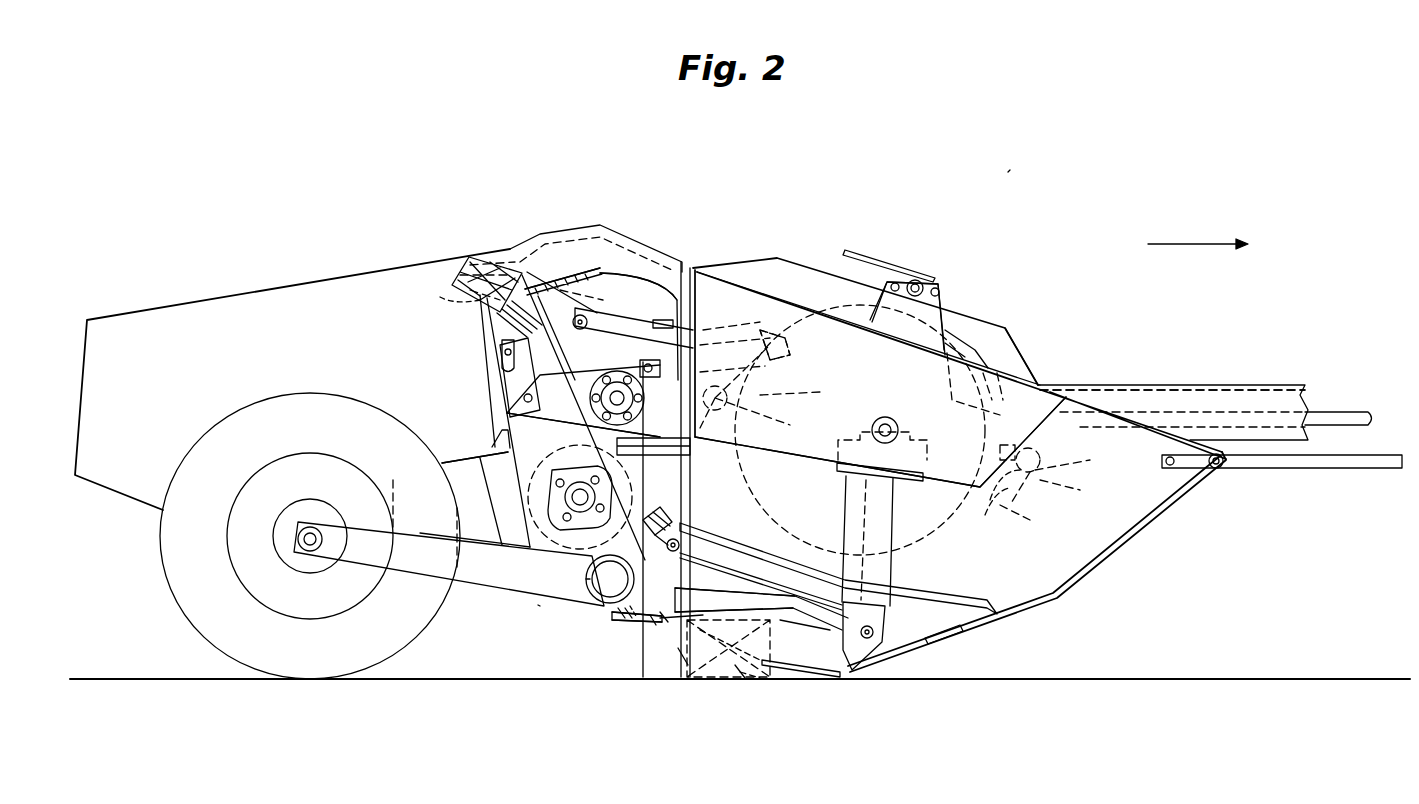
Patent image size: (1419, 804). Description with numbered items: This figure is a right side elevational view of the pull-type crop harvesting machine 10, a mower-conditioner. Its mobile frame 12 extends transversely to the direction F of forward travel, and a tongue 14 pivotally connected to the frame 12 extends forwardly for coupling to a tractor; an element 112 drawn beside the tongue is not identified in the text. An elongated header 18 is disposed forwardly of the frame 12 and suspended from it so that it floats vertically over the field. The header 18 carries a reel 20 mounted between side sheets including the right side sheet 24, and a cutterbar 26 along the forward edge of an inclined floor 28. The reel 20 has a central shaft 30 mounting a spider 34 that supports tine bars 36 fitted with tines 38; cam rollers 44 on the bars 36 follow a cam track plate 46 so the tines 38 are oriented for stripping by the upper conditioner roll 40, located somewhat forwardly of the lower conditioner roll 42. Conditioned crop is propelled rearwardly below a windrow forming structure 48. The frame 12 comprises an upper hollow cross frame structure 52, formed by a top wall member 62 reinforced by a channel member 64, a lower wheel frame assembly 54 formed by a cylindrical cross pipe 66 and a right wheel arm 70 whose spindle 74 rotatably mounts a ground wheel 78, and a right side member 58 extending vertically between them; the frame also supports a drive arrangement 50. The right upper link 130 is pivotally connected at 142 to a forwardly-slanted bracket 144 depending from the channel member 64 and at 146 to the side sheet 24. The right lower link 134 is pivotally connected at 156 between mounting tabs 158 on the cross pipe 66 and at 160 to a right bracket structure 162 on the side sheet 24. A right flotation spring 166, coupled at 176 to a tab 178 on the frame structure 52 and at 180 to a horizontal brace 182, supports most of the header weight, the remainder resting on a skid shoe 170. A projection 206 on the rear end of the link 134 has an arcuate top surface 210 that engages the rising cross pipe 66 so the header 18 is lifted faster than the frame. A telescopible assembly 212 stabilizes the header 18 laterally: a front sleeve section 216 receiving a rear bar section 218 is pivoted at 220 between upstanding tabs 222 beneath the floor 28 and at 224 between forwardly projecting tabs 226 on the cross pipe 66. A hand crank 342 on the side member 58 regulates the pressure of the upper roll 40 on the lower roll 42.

The crop material harvesting machine 10 is at (1006, 176).
The mobile frame 12 is at (537, 607).
The tongue 14 is at (1146, 376).
The header 18 is at (770, 255).
The reel 20 is at (943, 287).
The right side sheet 24 is at (1100, 565).
The cutterbar 26 is at (820, 680).
The floor 28 is at (758, 566).
The central shaft 30 is at (897, 422).
The spider 34 is at (1000, 501).
The tine bars 36 is at (915, 280).
The tines 38 is at (850, 256).
The upper conditioner roll 40 is at (567, 437).
The lower conditioner roll 42 is at (517, 470).
The cam rollers 44 is at (915, 348).
The cam track plate 46 is at (978, 350).
The windrow forming structure 48 is at (320, 280).
The drive arrangement 50 is at (1322, 410).
The upper hollow cross frame structure 52 is at (596, 234).
The lower wheel frame assembly 54 is at (573, 612).
The right side member 58 is at (657, 291).
The top wall member 62 is at (665, 262).
The channel member 64 is at (555, 285).
The cylindrical cross pipe 66 is at (586, 579).
The right wheel arm 70 is at (498, 585).
The spindle 74 is at (297, 535).
The ground wheel 78 is at (165, 566).
The shaft 112 is at (1225, 385).
The right upper link 130 is at (708, 330).
The right lower link 134 is at (835, 630).
The pivotal connection 142 is at (600, 355).
The right forwardly-slanted bracket 144 is at (500, 345).
The pivotal connection 146 is at (786, 339).
The pivotal connection 156 is at (680, 580).
The mounting tabs 158 is at (622, 612).
The pivotal connection 160 is at (875, 640).
The right bracket structure 162 is at (885, 618).
The right flotation spring 166 is at (656, 518).
The skid shoe 170 is at (740, 680).
The coupling 176 is at (470, 262).
The tab 178 is at (440, 297).
The coupling 180 is at (681, 545).
The horizontal brace 182 is at (757, 533).
The projection 206 is at (628, 610).
The arcuate top surface 210 is at (600, 620).
The telescopible assembly 212 is at (678, 650).
The front sleeve section 216 is at (655, 620).
The rear bar section 218 is at (665, 615).
The pivotal connection 220 is at (740, 630).
The upstanding tabs 222 is at (790, 695).
The pivotal connection 224 is at (610, 579).
The forwardly projecting tabs 226 is at (633, 610).
The hand actuated crank 342 is at (497, 420).
The direction of forward travel F is at (1168, 244).